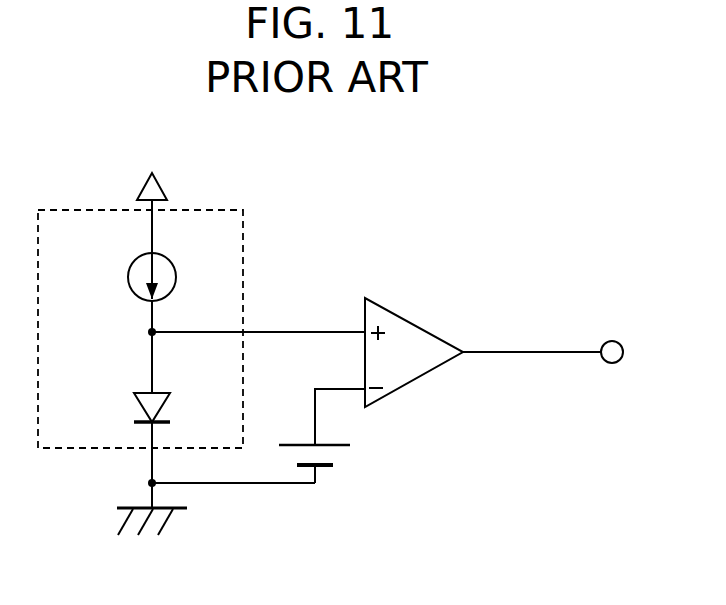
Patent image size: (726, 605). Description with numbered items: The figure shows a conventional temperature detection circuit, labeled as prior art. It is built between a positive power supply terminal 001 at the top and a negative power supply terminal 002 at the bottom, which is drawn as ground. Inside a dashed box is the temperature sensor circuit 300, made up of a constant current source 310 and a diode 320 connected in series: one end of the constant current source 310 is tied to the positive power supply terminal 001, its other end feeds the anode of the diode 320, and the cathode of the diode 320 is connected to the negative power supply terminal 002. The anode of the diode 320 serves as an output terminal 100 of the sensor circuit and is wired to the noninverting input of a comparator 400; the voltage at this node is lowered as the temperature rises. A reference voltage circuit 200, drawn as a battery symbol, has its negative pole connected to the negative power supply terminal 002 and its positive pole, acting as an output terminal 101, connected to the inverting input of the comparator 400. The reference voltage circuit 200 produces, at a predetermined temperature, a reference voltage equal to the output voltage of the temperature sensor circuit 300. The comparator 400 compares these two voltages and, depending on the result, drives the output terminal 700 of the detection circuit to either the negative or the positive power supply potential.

The positive power supply terminal 001 is at (147, 183).
The negative power supply terminal 002 is at (127, 507).
The output terminal 100 is at (253, 330).
The output terminal 101 is at (313, 403).
The reference voltage circuit 200 is at (343, 460).
The temperature sensor circuit 300 is at (215, 208).
The constant current source 310 is at (130, 268).
The diode 320 is at (140, 393).
The comparator 400 is at (428, 293).
The output terminal 700 is at (617, 342).